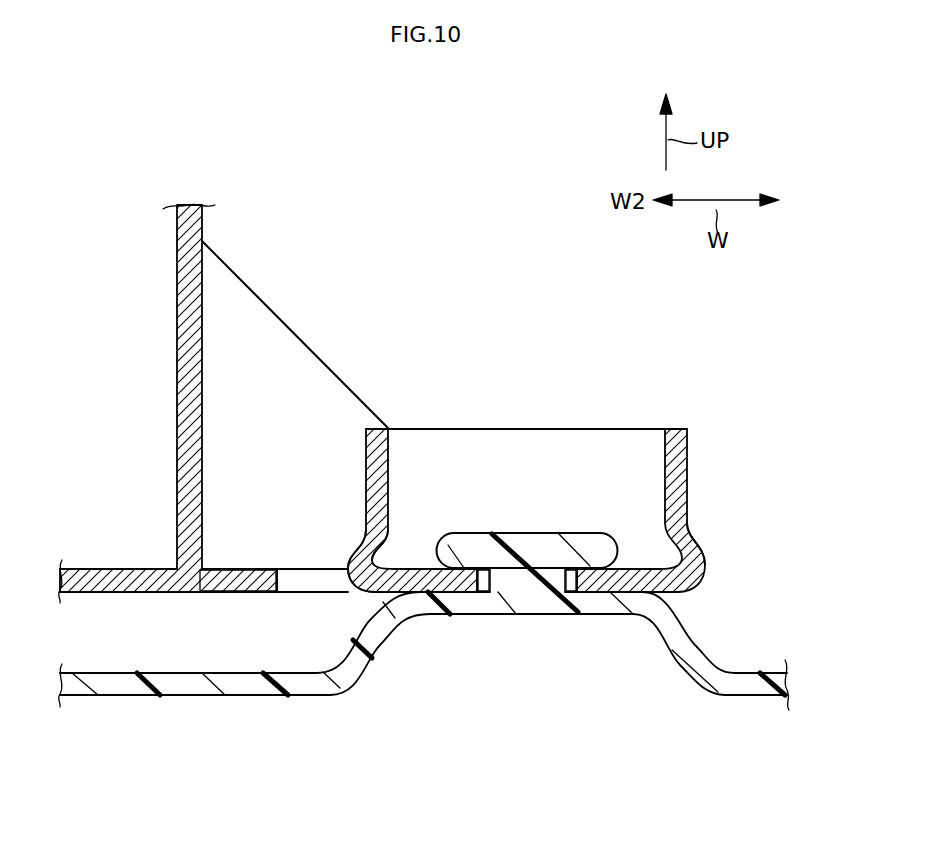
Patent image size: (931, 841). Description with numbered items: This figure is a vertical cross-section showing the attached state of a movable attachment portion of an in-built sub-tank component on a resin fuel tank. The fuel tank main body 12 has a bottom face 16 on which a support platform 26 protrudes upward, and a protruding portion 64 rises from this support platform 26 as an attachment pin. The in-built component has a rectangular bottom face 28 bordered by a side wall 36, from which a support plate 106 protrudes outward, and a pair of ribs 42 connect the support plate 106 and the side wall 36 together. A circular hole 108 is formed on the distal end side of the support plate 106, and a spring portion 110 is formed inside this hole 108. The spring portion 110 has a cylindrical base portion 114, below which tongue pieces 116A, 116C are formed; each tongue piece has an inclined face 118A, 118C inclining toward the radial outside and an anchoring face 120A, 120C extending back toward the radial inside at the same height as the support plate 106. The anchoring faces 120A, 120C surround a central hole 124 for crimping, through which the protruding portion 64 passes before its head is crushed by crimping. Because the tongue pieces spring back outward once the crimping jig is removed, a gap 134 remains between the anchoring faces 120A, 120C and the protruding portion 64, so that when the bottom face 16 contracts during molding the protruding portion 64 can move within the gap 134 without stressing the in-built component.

The fuel tank main body 12 is at (424, 671).
The bottom face 16 is at (178, 688).
The support platform 26 is at (424, 607).
The bottom face 28 is at (105, 568).
The side wall 36 is at (204, 373).
The ribs 42 is at (262, 297).
The protruding portion 64 is at (540, 545).
The support plate 106 is at (233, 582).
The hole 108 is at (283, 578).
The spring portion 110 is at (533, 476).
The base portion 114 is at (365, 455).
The tongue piece 116A is at (782, 518).
The tongue piece 116C is at (280, 476).
The inclined face 118A is at (692, 535).
The inclined face 118C is at (360, 535).
The anchoring face 120A is at (660, 573).
The anchoring face 120C is at (386, 572).
The hole 124 is at (559, 583).
The gap 134 is at (485, 583).